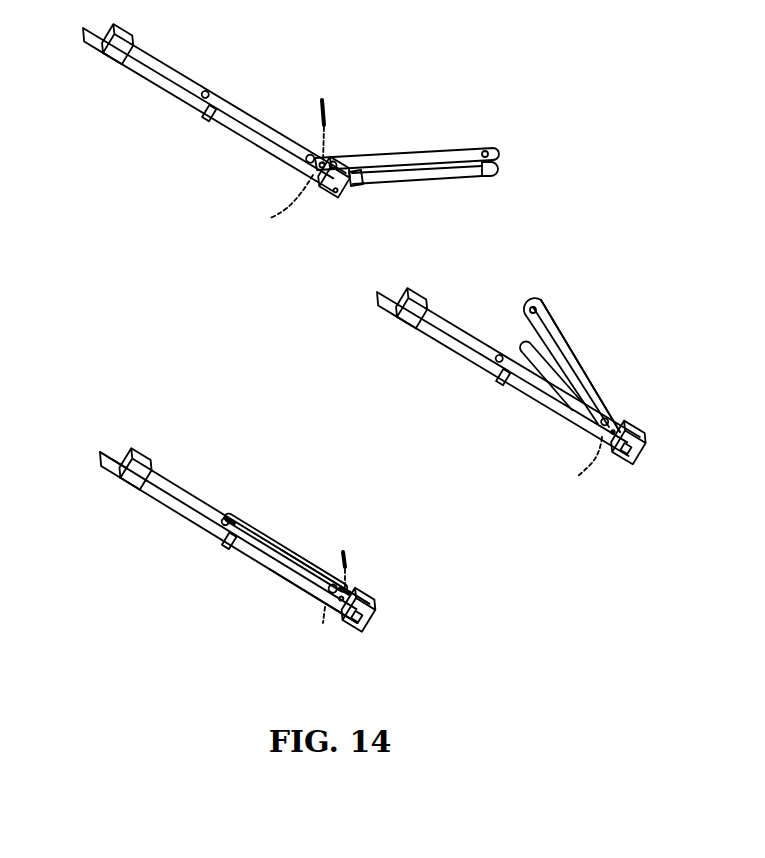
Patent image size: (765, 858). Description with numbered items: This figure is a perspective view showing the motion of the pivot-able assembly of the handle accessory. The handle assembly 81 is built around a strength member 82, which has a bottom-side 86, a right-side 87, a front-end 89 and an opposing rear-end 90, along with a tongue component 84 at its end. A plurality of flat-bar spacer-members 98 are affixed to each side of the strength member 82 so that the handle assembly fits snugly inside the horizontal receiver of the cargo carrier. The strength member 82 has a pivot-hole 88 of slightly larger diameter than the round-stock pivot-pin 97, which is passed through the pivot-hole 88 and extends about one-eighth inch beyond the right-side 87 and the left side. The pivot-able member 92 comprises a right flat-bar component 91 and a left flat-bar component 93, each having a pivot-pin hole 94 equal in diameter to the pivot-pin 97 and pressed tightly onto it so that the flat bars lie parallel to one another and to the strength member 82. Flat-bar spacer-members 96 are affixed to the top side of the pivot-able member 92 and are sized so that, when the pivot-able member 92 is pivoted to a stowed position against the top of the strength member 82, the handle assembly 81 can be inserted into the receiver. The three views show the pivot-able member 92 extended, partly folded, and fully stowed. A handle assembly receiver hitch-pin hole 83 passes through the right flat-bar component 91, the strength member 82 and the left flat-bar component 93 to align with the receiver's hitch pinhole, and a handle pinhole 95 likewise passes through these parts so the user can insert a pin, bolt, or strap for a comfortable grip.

The handle assembly 81 is at (469, 370).
The strength member 82 is at (446, 348).
The handle assembly receiver hitch-pin hole 83 is at (313, 595).
The tongue component 84 is at (93, 44).
The bottom-side 86 is at (257, 560).
The right-side 87 is at (178, 75).
The pivot-hole 88 is at (423, 409).
The front-end 89 is at (370, 627).
The rear-end 90 is at (140, 467).
The right flat-bar component 91 is at (412, 153).
The pivot-able member 92 is at (585, 362).
The left flat-bar component 93 is at (398, 180).
The pivot-pin hole 94 is at (300, 173).
The handle pinhole 95 is at (486, 150).
The flat-bar spacer-members 96 is at (357, 186).
The pivot-pin 97 is at (321, 97).
The flat-bar spacer-members 98 is at (135, 40).